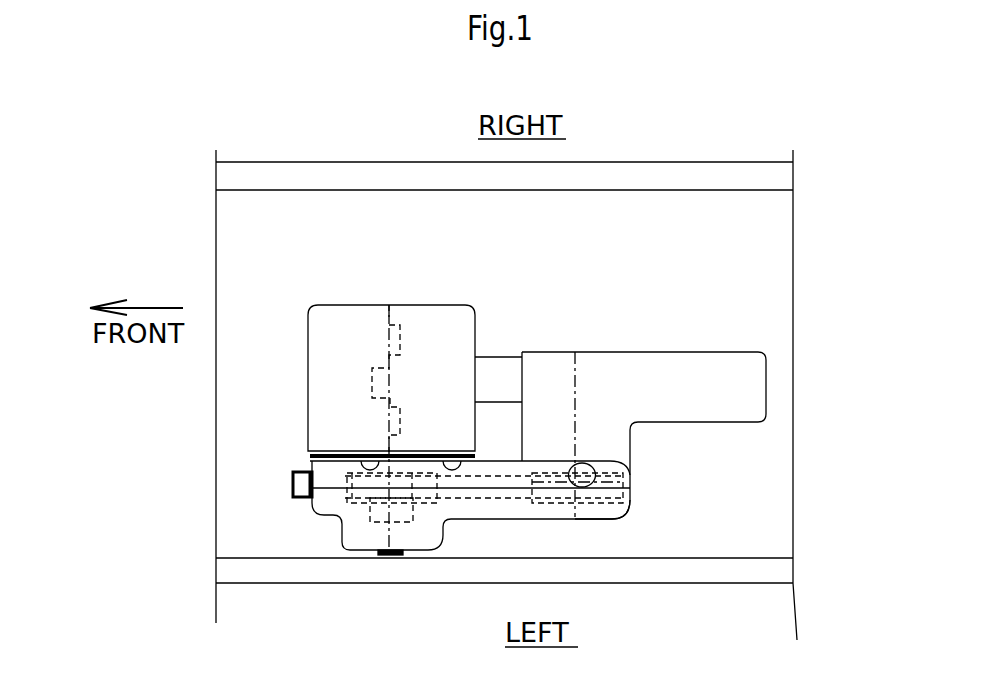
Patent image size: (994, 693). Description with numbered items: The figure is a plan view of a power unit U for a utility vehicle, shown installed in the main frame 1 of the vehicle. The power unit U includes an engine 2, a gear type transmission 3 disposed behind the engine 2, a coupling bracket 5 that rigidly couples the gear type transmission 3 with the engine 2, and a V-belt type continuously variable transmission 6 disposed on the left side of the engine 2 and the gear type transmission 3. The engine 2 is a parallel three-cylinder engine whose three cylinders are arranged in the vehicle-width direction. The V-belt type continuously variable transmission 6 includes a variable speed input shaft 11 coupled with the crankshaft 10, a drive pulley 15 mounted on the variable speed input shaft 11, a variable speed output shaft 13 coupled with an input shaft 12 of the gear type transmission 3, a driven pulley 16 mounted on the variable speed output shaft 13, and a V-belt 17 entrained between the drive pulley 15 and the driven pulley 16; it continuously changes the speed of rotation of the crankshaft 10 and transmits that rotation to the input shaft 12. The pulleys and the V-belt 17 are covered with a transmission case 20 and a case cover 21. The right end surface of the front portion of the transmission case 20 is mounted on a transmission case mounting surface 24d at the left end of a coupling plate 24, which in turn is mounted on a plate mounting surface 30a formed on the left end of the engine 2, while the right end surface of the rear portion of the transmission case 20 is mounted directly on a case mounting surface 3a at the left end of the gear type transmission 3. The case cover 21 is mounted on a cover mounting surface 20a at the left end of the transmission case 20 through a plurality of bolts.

The main frame 1 is at (657, 173).
The engine 2 is at (322, 280).
The crankshaft 10 is at (367, 335).
The coupling bracket 5 is at (495, 372).
The gear type transmission 3 is at (670, 338).
The power unit U is at (593, 322).
The case mounting surface 3a is at (630, 465).
The input shaft 12 is at (573, 438).
The variable speed output shaft 13 is at (577, 500).
The transmission case 20 is at (630, 470).
The case cover 21 is at (630, 503).
The V-belt 17 is at (485, 497).
The coupling plate 24 is at (350, 455).
The transmission case mounting surface 24d is at (362, 457).
The plate mounting surface 30a is at (440, 455).
The drive pulley 15 is at (319, 478).
The V-belt type continuously variable transmission 6 is at (308, 537).
The driven pulley 16 is at (602, 508).
The cover mounting surface 20a is at (347, 503).
The variable speed input shaft 11 is at (393, 528).